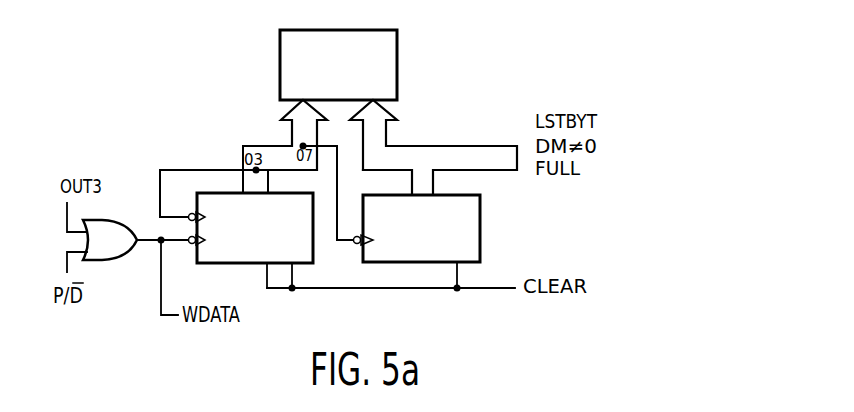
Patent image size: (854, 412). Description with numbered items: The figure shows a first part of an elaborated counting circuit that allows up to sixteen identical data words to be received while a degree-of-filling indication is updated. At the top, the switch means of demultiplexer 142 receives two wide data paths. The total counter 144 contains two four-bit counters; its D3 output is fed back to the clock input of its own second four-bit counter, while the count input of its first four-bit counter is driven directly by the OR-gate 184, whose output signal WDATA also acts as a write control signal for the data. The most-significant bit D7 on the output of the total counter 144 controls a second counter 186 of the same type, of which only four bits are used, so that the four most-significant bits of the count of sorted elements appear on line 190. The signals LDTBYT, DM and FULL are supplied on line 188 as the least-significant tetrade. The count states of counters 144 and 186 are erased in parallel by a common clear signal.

The switch means of demultiplexer 142 is at (401, 70).
The total counter 144 is at (233, 265).
The OR-gate 184 is at (117, 261).
The second counter 186 is at (481, 249).
The line 188 is at (510, 143).
The line 190 is at (433, 182).